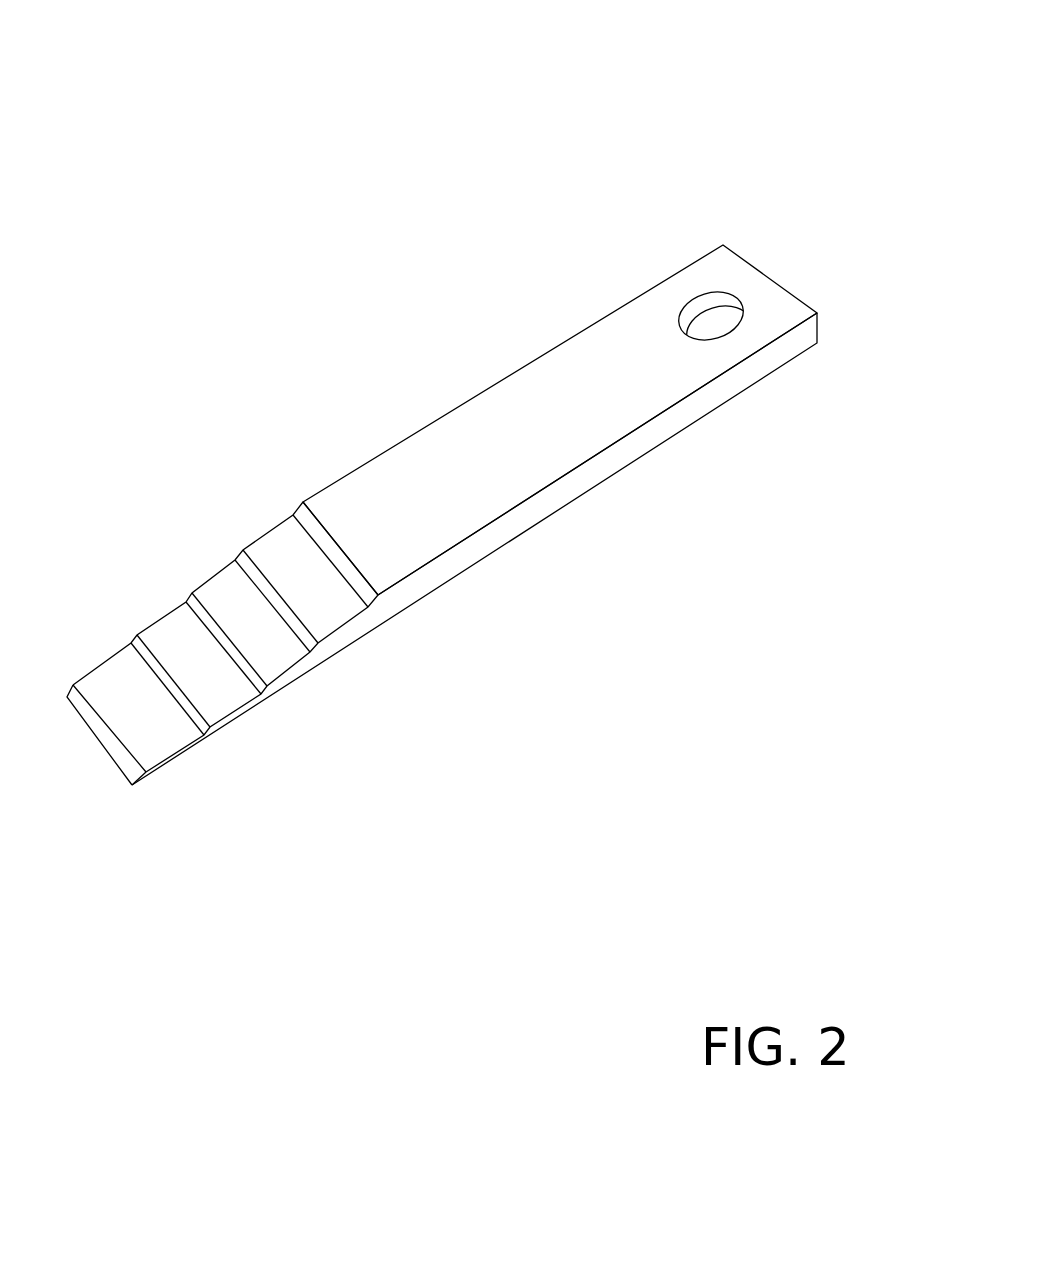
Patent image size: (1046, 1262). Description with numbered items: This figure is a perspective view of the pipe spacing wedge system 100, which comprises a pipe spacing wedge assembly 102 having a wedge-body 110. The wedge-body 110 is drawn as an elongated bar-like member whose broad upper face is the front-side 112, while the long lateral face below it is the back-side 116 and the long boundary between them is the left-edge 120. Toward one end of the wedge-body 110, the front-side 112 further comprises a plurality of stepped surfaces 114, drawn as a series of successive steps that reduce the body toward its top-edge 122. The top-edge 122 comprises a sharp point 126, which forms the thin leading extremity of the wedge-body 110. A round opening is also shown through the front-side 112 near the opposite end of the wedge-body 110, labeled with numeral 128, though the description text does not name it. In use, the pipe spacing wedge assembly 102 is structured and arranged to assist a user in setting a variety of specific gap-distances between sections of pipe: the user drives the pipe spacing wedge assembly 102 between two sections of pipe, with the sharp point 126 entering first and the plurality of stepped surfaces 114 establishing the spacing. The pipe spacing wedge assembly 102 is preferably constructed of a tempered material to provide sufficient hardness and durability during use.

The pipe spacing wedge system 100 is at (590, 100).
The pipe spacing wedge assembly 102 is at (627, 132).
The wedge-body 110 is at (667, 168).
The front-side 112 is at (553, 425).
The plurality of stepped surfaces 114 is at (229, 566).
The back-side 116 is at (650, 503).
The left-edge 120 is at (508, 522).
The top-edge 122 is at (133, 776).
The sharp point 126 is at (97, 744).
The hole 128 is at (710, 299).